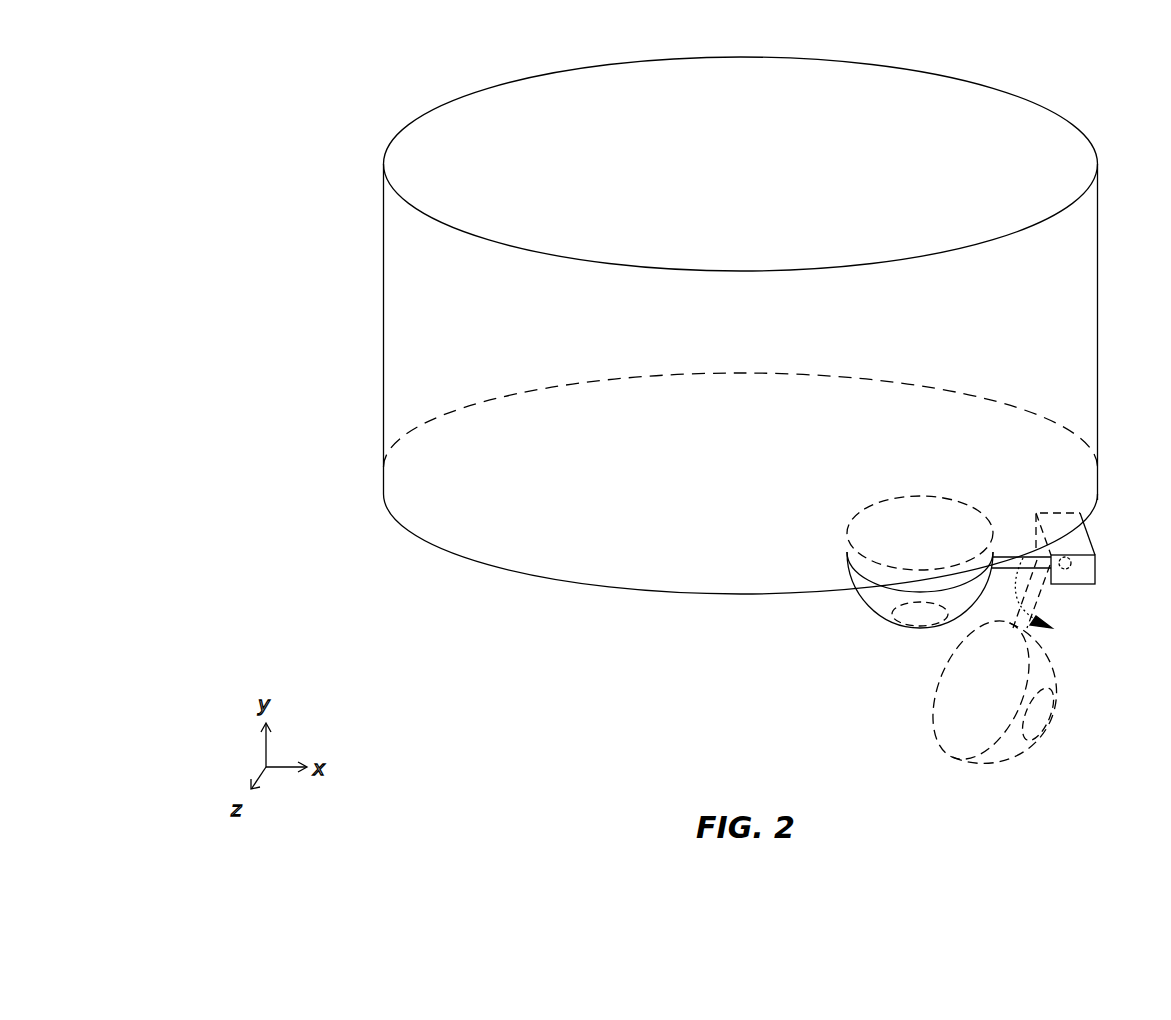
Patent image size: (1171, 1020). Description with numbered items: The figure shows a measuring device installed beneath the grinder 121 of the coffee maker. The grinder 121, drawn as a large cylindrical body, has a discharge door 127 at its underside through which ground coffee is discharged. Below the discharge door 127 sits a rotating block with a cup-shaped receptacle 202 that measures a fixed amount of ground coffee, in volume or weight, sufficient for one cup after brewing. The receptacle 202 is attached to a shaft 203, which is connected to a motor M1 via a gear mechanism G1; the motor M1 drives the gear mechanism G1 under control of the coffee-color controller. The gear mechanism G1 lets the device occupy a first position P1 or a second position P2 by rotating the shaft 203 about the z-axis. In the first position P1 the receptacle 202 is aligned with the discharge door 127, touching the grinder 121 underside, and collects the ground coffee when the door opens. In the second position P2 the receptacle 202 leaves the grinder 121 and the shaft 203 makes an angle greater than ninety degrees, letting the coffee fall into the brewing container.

The grinder 121 is at (384, 352).
The discharge door 127 is at (848, 535).
The cup-shaped receptacle 202 is at (863, 608).
The shaft 203 is at (1012, 556).
The motor M1 is at (1097, 568).
The gear mechanism G1 is at (1065, 573).
The first position P1 is at (860, 633).
The second position P2 is at (1060, 701).